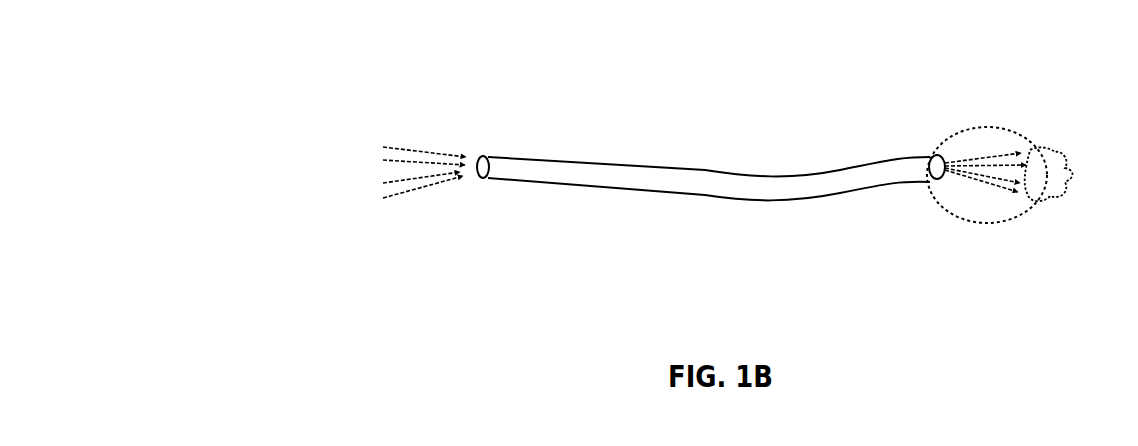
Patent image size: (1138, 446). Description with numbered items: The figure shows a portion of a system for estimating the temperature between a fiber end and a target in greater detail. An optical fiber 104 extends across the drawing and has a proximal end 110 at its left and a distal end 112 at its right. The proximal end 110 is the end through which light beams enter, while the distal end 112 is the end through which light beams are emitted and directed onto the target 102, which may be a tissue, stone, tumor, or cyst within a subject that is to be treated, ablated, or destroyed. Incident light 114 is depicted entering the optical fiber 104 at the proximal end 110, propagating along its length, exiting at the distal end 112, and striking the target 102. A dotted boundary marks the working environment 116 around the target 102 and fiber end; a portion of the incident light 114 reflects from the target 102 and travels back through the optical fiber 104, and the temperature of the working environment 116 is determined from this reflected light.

The target 102 is at (1048, 130).
The optical fiber 104 is at (715, 172).
The proximal end 110 is at (482, 155).
The distal end 112 is at (937, 155).
The incident light 114 is at (394, 124).
The working environment 116 is at (947, 212).